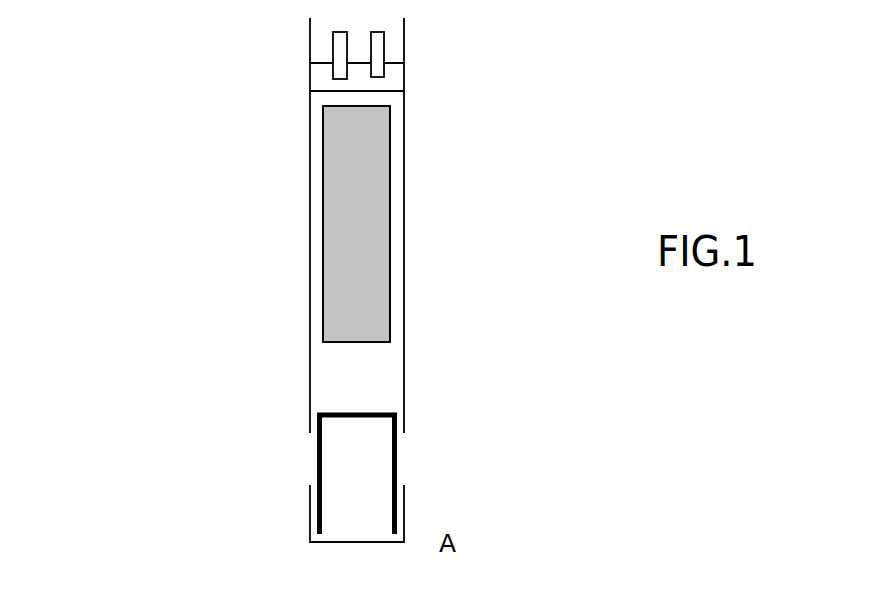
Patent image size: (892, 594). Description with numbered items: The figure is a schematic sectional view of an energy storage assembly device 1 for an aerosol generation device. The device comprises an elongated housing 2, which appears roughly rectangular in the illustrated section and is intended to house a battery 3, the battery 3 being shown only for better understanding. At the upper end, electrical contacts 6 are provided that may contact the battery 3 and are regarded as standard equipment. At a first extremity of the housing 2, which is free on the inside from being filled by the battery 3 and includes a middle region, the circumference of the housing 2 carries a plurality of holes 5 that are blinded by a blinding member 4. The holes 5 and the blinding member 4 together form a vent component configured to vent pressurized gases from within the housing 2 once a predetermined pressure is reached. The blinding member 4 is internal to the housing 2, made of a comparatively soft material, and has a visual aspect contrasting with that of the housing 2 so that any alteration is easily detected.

The energy storage assembly device 1 is at (259, 199).
The housing 2 is at (413, 53).
The battery 3 is at (357, 220).
The blinding member 4 is at (355, 410).
The holes 5 is at (297, 456).
The electrical contacts 6 is at (352, 57).